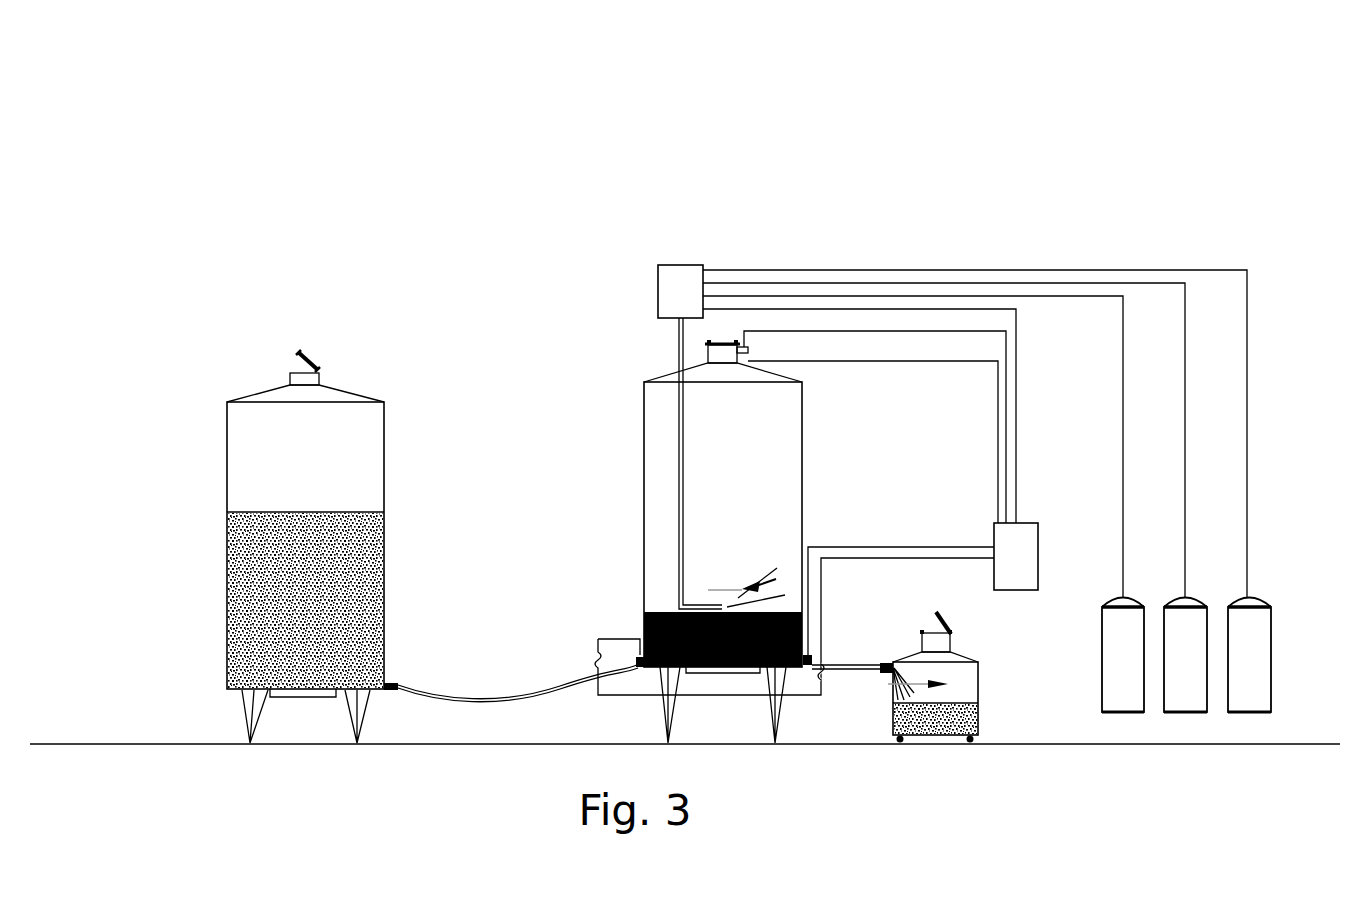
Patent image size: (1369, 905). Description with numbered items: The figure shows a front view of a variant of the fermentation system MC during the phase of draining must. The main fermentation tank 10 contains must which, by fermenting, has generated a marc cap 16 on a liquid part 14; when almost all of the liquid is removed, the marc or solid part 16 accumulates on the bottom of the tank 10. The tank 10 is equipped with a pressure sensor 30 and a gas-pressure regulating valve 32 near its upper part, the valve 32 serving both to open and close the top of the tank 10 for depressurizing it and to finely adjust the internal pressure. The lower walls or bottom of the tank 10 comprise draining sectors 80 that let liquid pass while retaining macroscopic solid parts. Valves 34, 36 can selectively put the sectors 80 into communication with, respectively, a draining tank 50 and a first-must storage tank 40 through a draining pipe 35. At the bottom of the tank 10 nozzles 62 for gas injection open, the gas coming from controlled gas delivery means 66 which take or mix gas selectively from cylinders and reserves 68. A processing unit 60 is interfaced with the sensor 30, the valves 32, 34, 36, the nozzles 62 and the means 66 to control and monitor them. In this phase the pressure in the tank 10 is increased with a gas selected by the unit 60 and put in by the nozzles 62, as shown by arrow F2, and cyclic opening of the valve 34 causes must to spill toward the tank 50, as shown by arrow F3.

The system of fermentation MC is at (957, 155).
The main fermentation tank 10 is at (646, 401).
The liquid part 14 is at (228, 634).
The marc cap 16 is at (661, 612).
The pressure sensor 30 is at (748, 360).
The gas-pressure regulating valve 32 is at (748, 350).
The valve 34 is at (814, 656).
The draining pipe 35 is at (849, 672).
The valve 36 is at (637, 657).
The first-must storage tank 40 is at (344, 391).
The draining tank 50 is at (968, 680).
The processing unit 60 is at (1017, 591).
The nozzles 62 is at (679, 326).
The controlled gas delivery means 66 is at (676, 277).
The cylinders and reserves 68 is at (1115, 655).
The draining sectors 80 is at (814, 622).
The arrow F2 is at (724, 589).
The arrow F3 is at (902, 668).